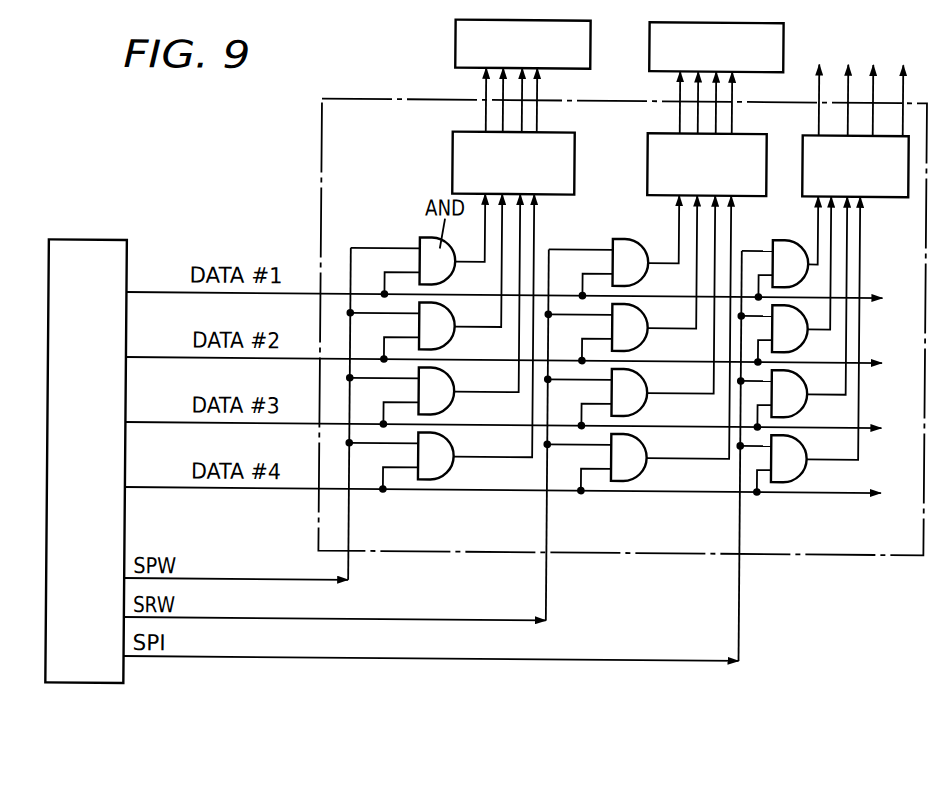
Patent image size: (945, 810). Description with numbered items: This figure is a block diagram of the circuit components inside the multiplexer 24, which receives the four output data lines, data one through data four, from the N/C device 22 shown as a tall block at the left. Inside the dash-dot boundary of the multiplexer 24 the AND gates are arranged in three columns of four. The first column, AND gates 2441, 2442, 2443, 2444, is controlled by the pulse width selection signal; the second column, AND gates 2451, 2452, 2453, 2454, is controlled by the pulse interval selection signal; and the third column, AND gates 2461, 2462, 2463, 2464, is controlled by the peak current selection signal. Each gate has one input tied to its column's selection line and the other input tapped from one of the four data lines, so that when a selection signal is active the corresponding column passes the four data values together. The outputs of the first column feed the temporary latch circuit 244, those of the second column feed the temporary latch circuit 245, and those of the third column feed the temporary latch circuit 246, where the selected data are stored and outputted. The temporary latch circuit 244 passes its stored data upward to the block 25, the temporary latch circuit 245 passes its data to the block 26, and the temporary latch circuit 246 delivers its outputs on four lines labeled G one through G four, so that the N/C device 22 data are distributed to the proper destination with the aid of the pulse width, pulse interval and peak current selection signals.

The N/C device 22 is at (109, 242).
The multiplexer 24 is at (393, 99).
The first register 25 is at (522, 44).
The second register 26 is at (716, 47).
The temporary latch circuit 244 is at (513, 131).
The temporary latch circuit 245 is at (707, 133).
The temporary latch circuit 246 is at (861, 116).
The AND gate 2441 is at (419, 237).
The AND gate 2442 is at (450, 341).
The AND gate 2443 is at (451, 405).
The AND gate 2444 is at (451, 470).
The AND gate 2451 is at (618, 241).
The AND gate 2452 is at (647, 333).
The AND gate 2453 is at (645, 406).
The AND gate 2454 is at (648, 470).
The AND gate 2461 is at (792, 239).
The AND gate 2462 is at (804, 342).
The AND gate 2463 is at (805, 410).
The AND gate 2464 is at (806, 472).